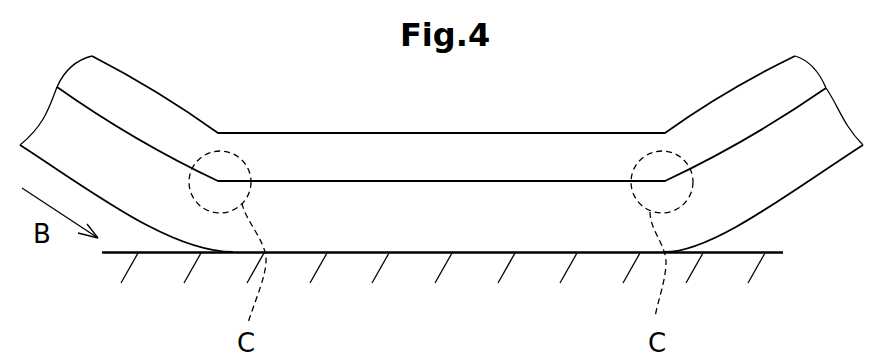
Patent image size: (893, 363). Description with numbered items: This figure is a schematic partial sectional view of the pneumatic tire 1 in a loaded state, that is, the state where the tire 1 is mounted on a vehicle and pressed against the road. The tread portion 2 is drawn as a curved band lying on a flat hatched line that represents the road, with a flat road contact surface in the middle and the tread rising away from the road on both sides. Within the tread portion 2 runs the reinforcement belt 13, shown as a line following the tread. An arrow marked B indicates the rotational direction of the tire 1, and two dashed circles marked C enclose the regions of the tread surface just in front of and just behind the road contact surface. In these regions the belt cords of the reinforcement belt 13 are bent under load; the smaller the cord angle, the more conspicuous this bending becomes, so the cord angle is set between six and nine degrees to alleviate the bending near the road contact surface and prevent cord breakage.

The tire 1 is at (441, 148).
The reinforcement belt 13 is at (117, 127).
The tread portion 2 is at (418, 253).